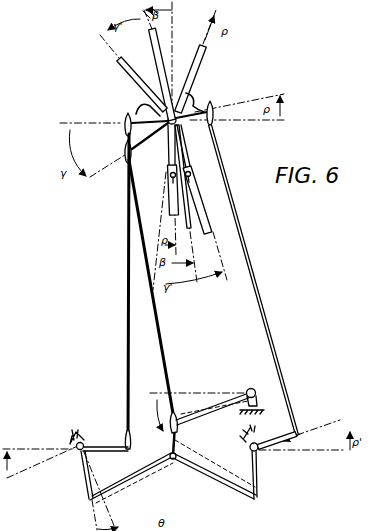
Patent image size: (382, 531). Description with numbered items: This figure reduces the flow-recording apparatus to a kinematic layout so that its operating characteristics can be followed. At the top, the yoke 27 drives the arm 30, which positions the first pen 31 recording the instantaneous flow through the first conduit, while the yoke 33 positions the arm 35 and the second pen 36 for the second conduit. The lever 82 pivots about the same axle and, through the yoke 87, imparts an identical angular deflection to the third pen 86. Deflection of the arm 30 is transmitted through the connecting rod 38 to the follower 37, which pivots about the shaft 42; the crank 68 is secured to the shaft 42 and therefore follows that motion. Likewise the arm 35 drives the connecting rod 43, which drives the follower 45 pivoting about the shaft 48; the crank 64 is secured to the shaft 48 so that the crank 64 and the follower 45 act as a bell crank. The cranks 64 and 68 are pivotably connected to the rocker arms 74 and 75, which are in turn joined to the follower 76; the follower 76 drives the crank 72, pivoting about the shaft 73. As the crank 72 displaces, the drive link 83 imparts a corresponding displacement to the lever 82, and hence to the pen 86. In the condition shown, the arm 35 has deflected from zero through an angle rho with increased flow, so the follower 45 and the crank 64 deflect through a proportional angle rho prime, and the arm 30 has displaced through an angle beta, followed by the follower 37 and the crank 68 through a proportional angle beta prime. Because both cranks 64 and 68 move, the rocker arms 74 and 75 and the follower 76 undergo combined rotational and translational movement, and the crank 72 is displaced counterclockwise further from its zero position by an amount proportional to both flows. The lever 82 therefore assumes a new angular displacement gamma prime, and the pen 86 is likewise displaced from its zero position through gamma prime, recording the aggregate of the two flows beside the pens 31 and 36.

The yoke 27 is at (150, 42).
The yoke 33 is at (204, 64).
The yoke 87 is at (125, 66).
The arm 30 is at (142, 108).
The arm 35 is at (196, 106).
The lever 82 is at (126, 143).
The first pen 31 is at (171, 201).
The second pen 36 is at (188, 222).
The third pen 86 is at (208, 214).
The connecting rod 38 is at (127, 345).
The drive link 83 is at (164, 343).
The connecting rod 43 is at (247, 256).
The follower 37 is at (110, 446).
The shaft 42 is at (71, 442).
The crank 68 is at (86, 475).
The rocker arm 74 is at (121, 484).
The follower 76 is at (169, 455).
The rocker arm 75 is at (223, 484).
The crank 64 is at (259, 493).
The shaft 48 is at (257, 455).
The follower 45 is at (284, 442).
The crank 72 is at (203, 413).
The shaft 73 is at (262, 399).